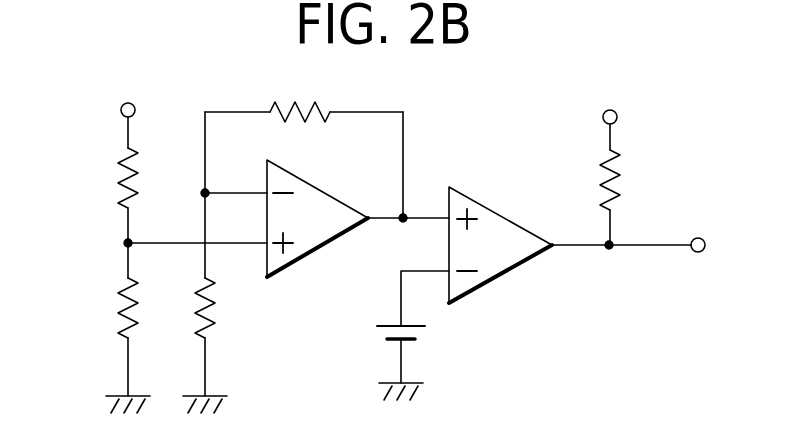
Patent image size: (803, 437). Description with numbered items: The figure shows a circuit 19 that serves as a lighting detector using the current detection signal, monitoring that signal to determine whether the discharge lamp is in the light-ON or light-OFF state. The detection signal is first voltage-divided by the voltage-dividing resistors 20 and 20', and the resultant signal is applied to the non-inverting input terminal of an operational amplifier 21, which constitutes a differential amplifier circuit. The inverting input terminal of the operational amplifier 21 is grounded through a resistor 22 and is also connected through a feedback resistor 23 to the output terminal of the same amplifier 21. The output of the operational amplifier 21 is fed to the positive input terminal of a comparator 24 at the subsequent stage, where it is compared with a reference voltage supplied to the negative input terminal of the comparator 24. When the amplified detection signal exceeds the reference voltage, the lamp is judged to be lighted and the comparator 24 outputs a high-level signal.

The circuit 19 is at (547, 99).
The voltage-dividing resistor 20 is at (92, 178).
The voltage-dividing resistor 20' is at (91, 308).
The operational amplifier 21 is at (328, 248).
The resistor 22 is at (212, 325).
The feedback resistor 23 is at (290, 102).
The comparator 24 is at (512, 275).